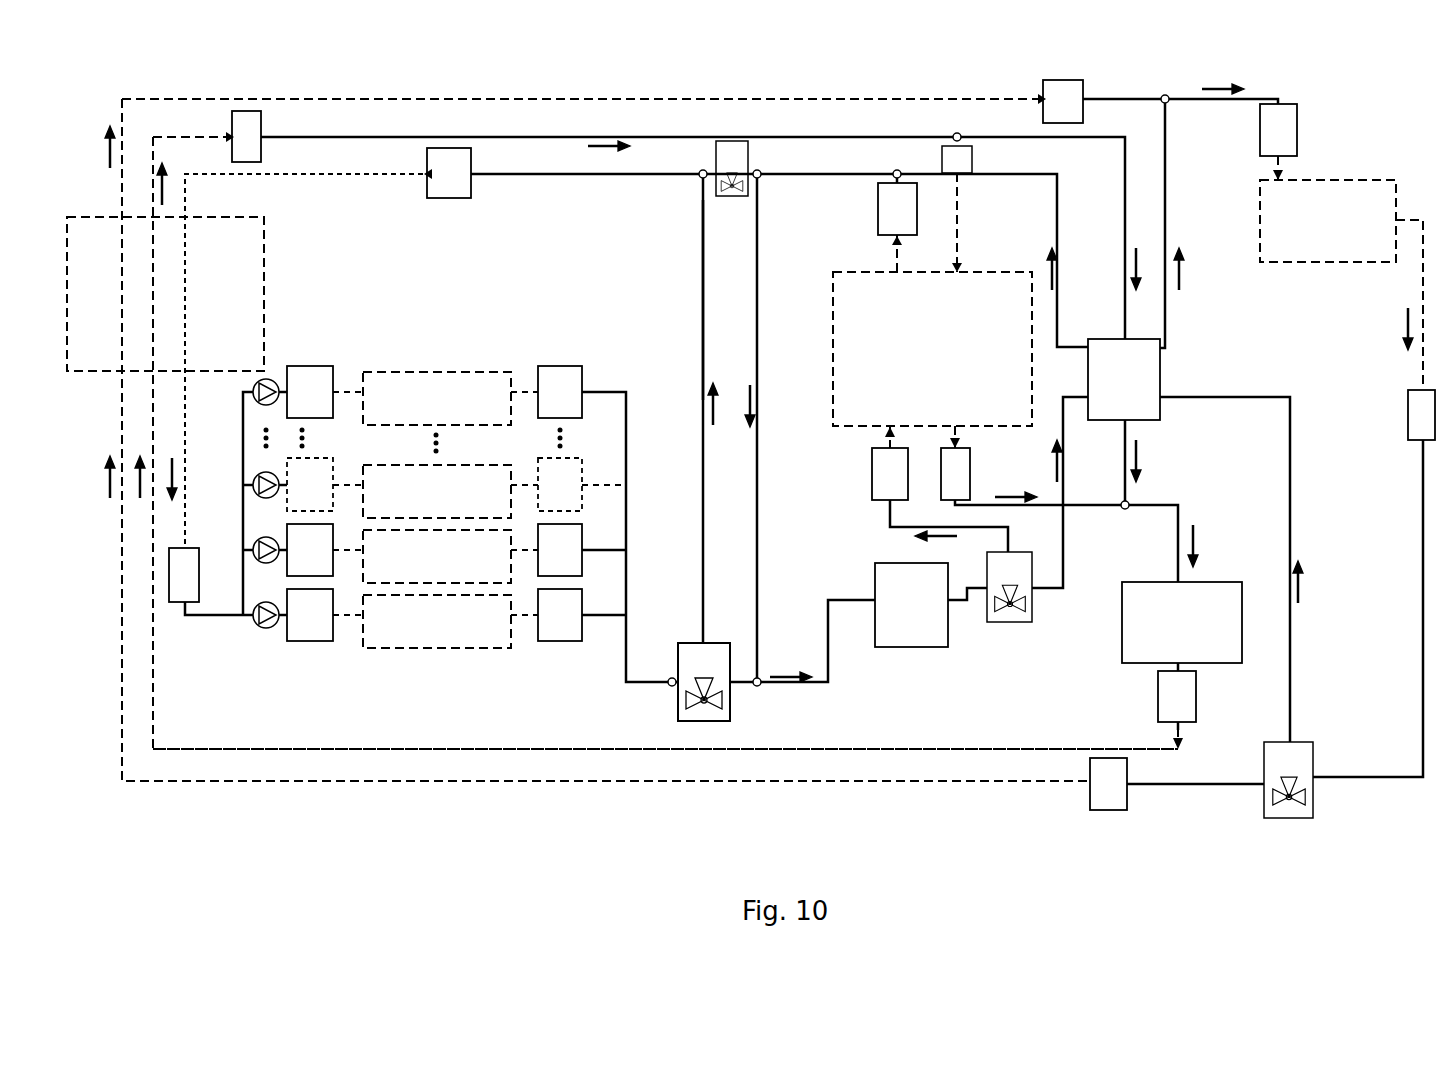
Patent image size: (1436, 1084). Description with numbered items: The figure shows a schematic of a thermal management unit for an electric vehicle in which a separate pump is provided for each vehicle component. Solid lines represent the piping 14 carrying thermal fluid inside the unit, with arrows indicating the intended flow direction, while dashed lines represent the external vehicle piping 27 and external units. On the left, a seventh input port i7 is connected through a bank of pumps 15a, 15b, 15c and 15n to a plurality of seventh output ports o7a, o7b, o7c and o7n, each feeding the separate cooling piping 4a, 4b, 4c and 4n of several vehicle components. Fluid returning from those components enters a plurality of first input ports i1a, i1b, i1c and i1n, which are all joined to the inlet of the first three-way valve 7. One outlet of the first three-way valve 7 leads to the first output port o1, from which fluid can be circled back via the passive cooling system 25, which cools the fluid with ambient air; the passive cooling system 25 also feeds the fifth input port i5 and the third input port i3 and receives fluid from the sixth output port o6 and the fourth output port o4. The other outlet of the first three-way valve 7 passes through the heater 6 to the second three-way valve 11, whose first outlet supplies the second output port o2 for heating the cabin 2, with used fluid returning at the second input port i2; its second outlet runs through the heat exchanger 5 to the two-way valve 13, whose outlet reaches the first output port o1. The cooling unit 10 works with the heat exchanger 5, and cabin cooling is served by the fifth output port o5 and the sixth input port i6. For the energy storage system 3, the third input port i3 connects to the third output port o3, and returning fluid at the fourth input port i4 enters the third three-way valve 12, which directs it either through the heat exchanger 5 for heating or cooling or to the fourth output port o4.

The passive cooling system 25 is at (165, 294).
The fifth input port i5 is at (246, 136).
The first output port o1 is at (449, 173).
The two-way valve 13 is at (731, 168).
The piping 14 is at (698, 276).
The fifth output port o5 is at (957, 159).
The second input port i2 is at (897, 209).
The cabin 2 is at (932, 349).
The second output port o2 is at (890, 474).
The sixth input port i6 is at (955, 474).
The heat exchanger 5 is at (1124, 379).
The third input port i3 is at (1063, 101).
The third output port o3 is at (1278, 130).
The energy storage system 3 is at (1328, 221).
The fourth input port i4 is at (1421, 415).
The pump 15n is at (262, 366).
The pump 15c is at (258, 466).
The pump 15b is at (256, 534).
The pump 15a is at (268, 634).
The seventh output port o7n is at (310, 392).
The seventh output port o7c is at (310, 484).
The seventh output port o7b is at (310, 550).
The seventh output port o7a is at (310, 615).
The separate cooling piping 4n is at (437, 398).
The separate cooling piping 4c is at (437, 491).
The separate cooling piping 4b is at (437, 556).
The separate cooling piping 4a is at (437, 621).
The first input port i1n is at (560, 392).
The first input port i1c is at (560, 484).
The first input port i1b is at (560, 550).
The first input port i1a is at (560, 615).
The seventh input port i7 is at (184, 575).
The vehicle piping 27 is at (488, 740).
The first three-way valve 7 is at (703, 672).
The heater 6 is at (911, 605).
The second three-way valve 11 is at (1007, 576).
The cooling unit 10 is at (1182, 622).
The sixth output port o6 is at (1177, 696).
The third three-way valve 12 is at (1288, 769).
The fourth output port o4 is at (1108, 784).